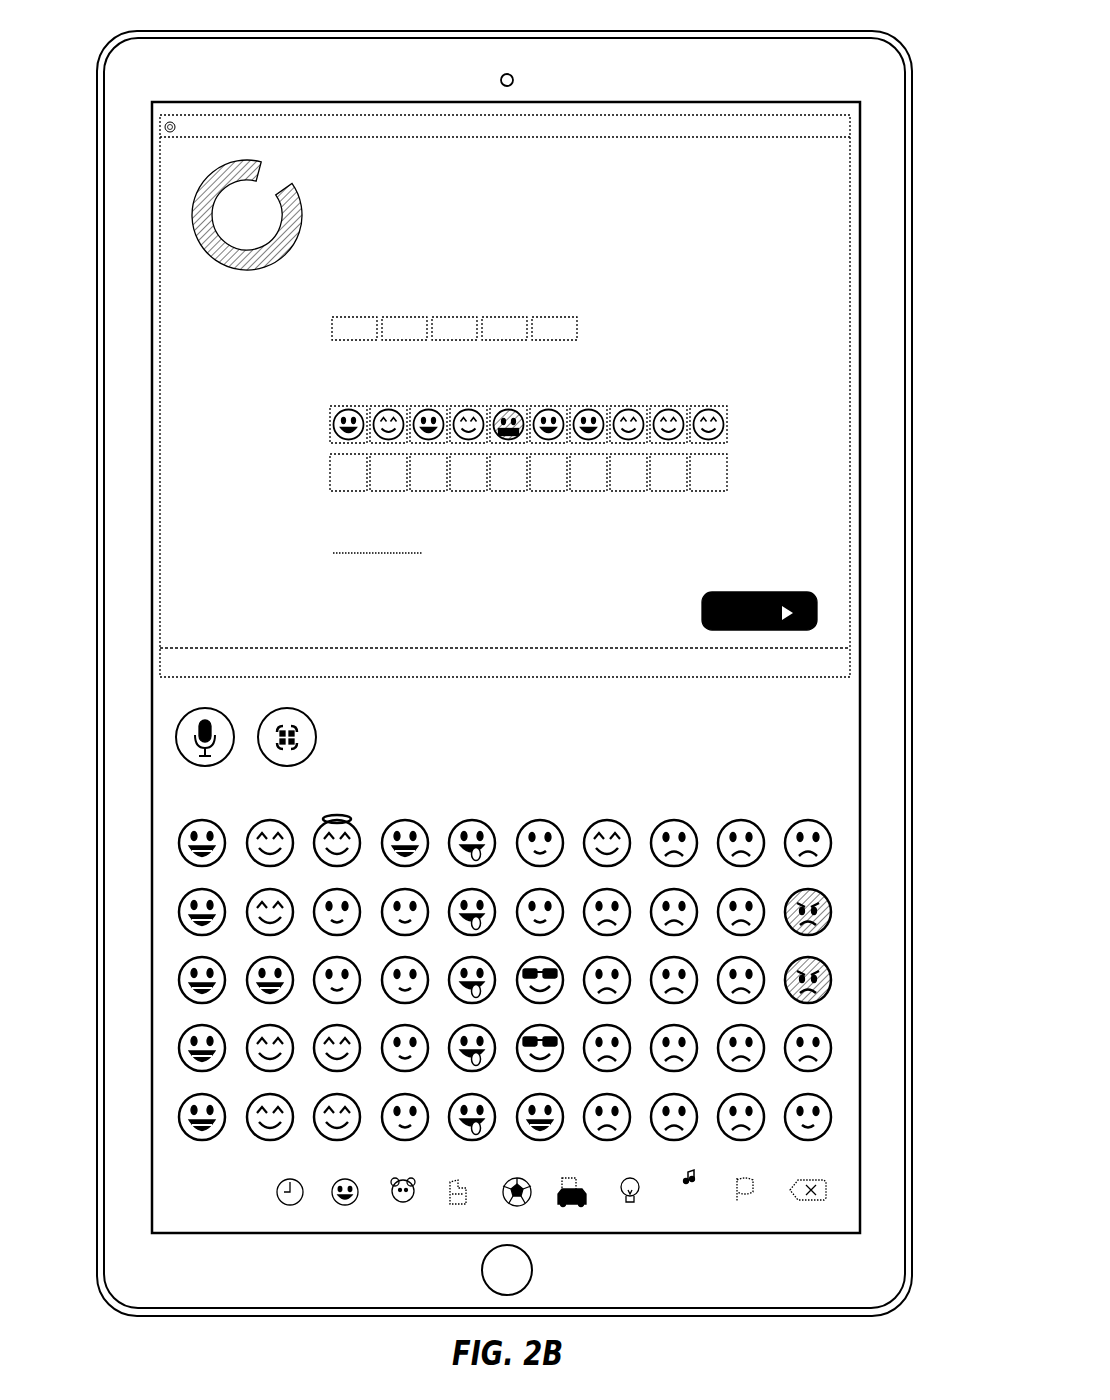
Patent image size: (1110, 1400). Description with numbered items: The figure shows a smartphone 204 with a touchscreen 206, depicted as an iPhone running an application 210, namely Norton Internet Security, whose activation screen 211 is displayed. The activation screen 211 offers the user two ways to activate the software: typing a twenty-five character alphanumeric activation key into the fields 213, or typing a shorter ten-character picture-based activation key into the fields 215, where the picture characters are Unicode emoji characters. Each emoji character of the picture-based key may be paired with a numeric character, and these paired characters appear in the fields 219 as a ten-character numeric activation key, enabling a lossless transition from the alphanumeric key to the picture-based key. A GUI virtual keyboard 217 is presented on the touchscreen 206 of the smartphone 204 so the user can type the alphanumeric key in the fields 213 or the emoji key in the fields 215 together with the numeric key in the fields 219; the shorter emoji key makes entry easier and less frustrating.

The smartphone 204 is at (903, 42).
The touchscreen 206 is at (858, 242).
The application 210 is at (245, 115).
The activation screen 211 is at (310, 177).
The fields 213 is at (598, 322).
The fields 215 is at (745, 422).
The GUI virtual keyboard 217 is at (171, 711).
The fields 219 is at (745, 467).